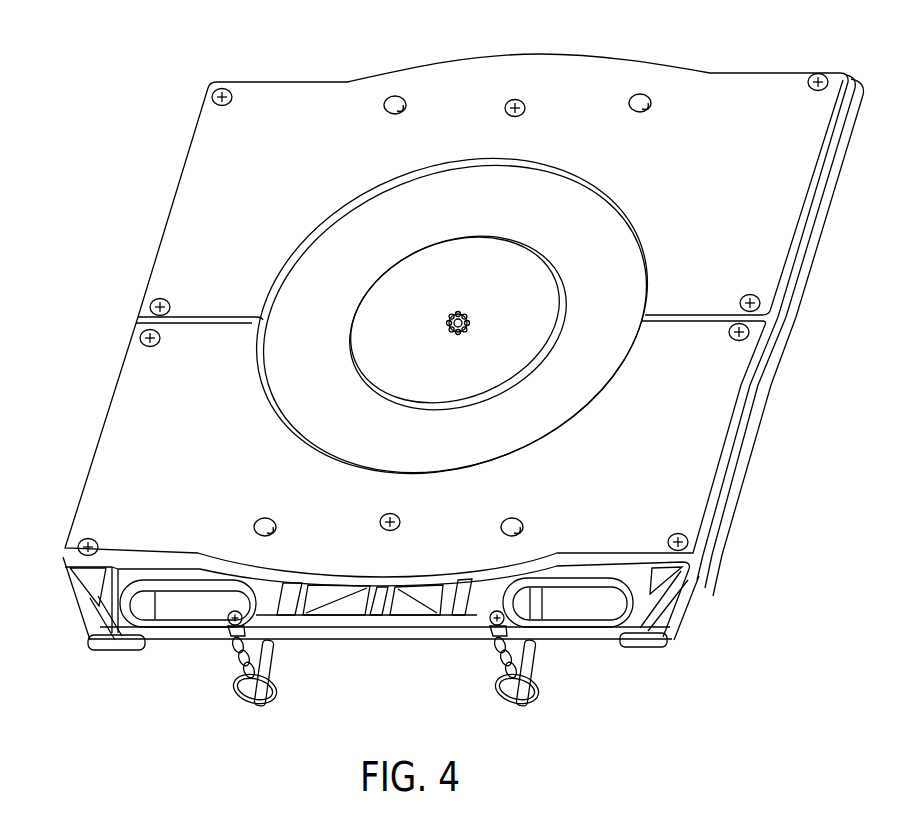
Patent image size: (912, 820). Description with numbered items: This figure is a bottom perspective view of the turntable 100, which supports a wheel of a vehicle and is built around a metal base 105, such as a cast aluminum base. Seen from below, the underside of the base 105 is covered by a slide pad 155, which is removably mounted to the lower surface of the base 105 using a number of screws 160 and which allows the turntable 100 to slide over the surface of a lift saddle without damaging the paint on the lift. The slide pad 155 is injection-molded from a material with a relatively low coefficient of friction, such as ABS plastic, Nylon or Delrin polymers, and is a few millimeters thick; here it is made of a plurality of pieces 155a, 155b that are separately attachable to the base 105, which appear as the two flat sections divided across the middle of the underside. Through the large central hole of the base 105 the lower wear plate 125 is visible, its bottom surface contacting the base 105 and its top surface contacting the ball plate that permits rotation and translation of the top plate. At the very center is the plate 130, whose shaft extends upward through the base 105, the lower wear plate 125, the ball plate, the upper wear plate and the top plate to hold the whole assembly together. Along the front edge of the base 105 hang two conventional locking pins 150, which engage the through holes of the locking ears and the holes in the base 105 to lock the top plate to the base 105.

The turntable 100 is at (149, 89).
The base 105 is at (399, 633).
The lower wear plate 125 is at (503, 215).
The plate 130 is at (489, 286).
The locking pins 150 is at (271, 665).
The slide pad 155 is at (787, 171).
The slide pad piece 155a is at (279, 175).
The slide pad piece 155b is at (188, 477).
The screws 160 is at (826, 73).